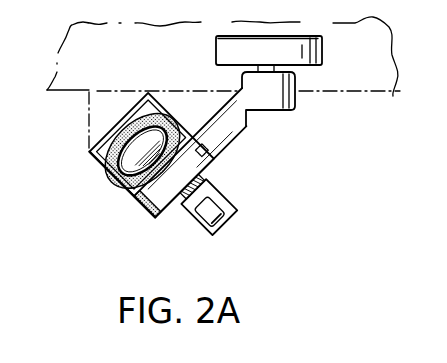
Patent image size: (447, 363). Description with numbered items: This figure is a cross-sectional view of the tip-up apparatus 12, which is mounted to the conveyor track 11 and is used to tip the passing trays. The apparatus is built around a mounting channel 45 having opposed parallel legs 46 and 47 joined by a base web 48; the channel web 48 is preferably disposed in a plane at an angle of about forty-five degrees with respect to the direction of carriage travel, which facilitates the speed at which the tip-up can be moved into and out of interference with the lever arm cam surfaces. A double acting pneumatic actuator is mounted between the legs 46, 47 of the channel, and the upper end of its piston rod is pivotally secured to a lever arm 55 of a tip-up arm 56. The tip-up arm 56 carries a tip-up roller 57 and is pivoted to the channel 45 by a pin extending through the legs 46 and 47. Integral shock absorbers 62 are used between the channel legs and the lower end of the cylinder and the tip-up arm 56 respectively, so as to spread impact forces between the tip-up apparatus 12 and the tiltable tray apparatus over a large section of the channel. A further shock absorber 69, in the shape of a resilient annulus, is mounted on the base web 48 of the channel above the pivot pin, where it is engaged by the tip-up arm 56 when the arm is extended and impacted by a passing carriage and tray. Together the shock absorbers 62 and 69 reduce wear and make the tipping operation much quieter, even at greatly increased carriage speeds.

The conveyor track 11 is at (384, 91).
The tip-up apparatus 12 is at (277, 195).
The mounting channel 45 is at (96, 171).
The channel leg 46 is at (135, 208).
The channel leg 47 is at (195, 128).
The base web 48 is at (119, 118).
The lever arm 55 is at (207, 247).
The tip-up arm 56 is at (232, 150).
The tip-up roller 57 is at (297, 46).
The shock absorber 62 is at (158, 214).
The shock absorber 69 is at (115, 187).